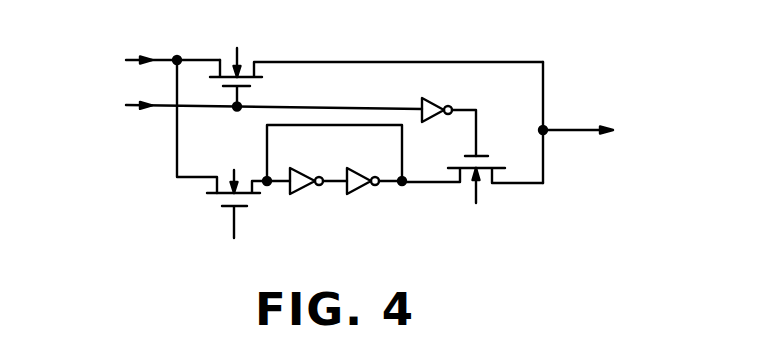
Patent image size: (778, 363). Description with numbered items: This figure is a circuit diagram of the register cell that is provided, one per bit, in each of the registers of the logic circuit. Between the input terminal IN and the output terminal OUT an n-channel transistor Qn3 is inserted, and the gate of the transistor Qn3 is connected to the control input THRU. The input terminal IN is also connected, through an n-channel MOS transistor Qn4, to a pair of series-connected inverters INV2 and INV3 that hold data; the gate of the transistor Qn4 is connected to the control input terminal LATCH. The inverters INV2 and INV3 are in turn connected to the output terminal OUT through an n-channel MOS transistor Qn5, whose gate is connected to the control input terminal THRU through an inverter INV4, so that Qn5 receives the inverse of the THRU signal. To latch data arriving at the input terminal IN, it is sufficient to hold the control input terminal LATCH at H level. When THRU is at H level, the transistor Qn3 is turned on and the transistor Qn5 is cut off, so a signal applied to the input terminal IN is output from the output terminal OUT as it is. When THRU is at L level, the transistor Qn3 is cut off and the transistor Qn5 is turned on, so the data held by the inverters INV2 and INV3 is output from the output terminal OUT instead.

The input terminal IN is at (151, 60).
The control input terminal THRU is at (234, 103).
The control input terminal LATCH is at (234, 260).
The output terminal OUT is at (602, 135).
The n-channel transistor Qn3 is at (376, 64).
The n-channel MOS transistor Qn4 is at (235, 188).
The n-channel MOS transistor Qn5 is at (472, 197).
The inverter INV2 is at (307, 167).
The inverter INV3 is at (368, 201).
The inverter INV4 is at (457, 115).